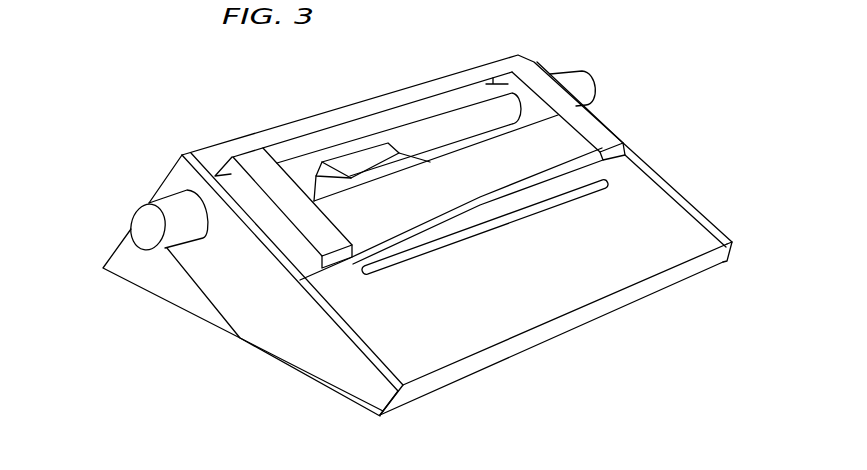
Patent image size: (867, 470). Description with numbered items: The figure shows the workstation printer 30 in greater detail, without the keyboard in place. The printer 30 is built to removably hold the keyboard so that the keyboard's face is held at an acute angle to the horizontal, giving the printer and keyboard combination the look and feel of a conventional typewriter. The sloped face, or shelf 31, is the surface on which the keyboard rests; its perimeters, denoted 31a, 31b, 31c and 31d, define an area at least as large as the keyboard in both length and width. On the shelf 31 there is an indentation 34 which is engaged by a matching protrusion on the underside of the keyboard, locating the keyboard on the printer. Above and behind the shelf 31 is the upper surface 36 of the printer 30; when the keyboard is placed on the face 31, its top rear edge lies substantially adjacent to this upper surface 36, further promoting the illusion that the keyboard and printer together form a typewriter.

The printer 30 is at (417, 235).
The face 31 is at (417, 235).
The perimeter of shelf 31a is at (703, 215).
The perimeter of shelf 31b is at (660, 273).
The perimeter of shelf 31c is at (335, 327).
The perimeter of shelf 31d is at (615, 170).
The indentation 34 is at (440, 252).
The upper surface 36 is at (577, 142).